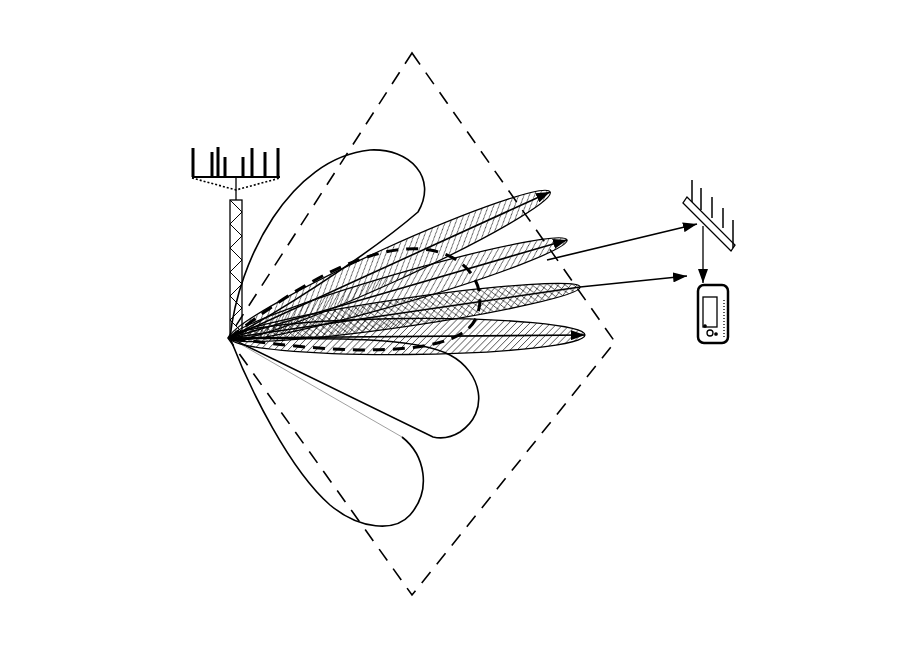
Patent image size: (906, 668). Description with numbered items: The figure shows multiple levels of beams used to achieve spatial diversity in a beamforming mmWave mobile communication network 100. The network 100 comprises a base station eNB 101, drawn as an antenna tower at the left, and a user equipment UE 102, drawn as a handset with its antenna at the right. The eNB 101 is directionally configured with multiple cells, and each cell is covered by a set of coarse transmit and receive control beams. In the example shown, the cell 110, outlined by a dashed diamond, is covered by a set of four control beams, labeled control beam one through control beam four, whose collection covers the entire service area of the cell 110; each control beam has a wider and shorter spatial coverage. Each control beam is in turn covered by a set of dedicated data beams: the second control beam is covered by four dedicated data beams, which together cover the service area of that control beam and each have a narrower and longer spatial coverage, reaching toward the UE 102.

The beamforming mobile communication network 100 is at (116, 48).
The base station eNB 101 is at (232, 150).
The user equipment UE 102 is at (712, 196).
The cell 110 is at (489, 468).